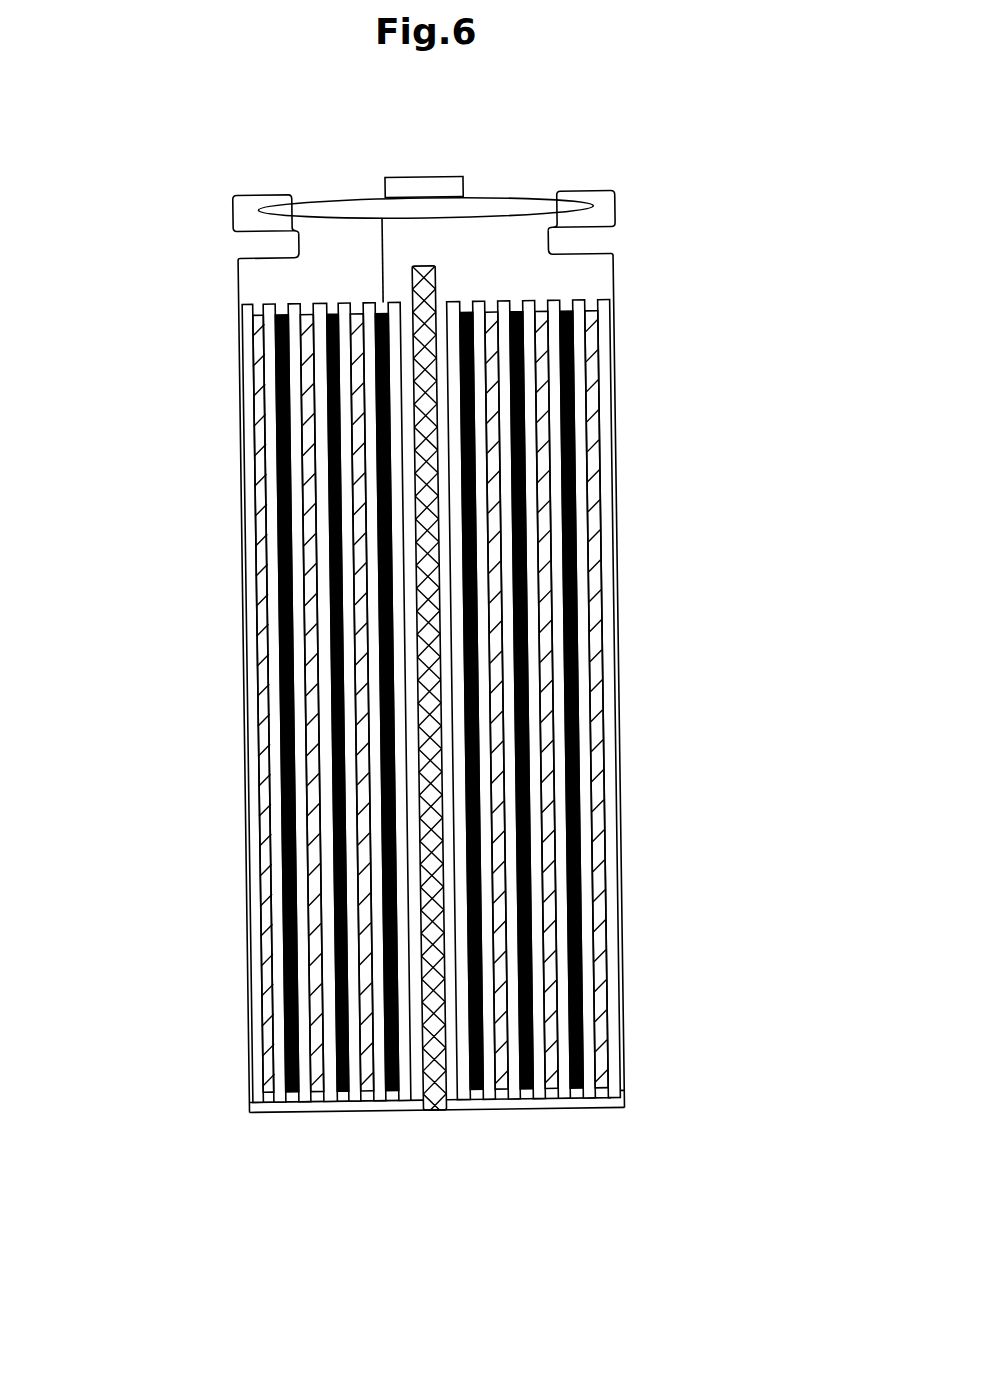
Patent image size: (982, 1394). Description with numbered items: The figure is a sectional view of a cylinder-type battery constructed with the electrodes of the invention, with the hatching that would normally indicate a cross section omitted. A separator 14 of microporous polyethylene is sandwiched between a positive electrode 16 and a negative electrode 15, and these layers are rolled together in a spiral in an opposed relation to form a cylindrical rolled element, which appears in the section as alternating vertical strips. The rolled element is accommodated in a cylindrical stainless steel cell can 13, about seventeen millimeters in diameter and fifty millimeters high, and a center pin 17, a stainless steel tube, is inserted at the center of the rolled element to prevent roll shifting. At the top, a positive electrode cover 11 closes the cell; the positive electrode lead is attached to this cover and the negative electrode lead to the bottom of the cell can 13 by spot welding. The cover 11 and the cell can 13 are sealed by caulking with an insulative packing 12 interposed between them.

The positive electrode cover 11 is at (430, 178).
The insulative packing 12 is at (615, 195).
The cell can 13 is at (613, 272).
The separator 14 is at (612, 730).
The negative electrode 15 is at (259, 556).
The positive electrode 16 is at (282, 312).
The center pin 17 is at (432, 1103).